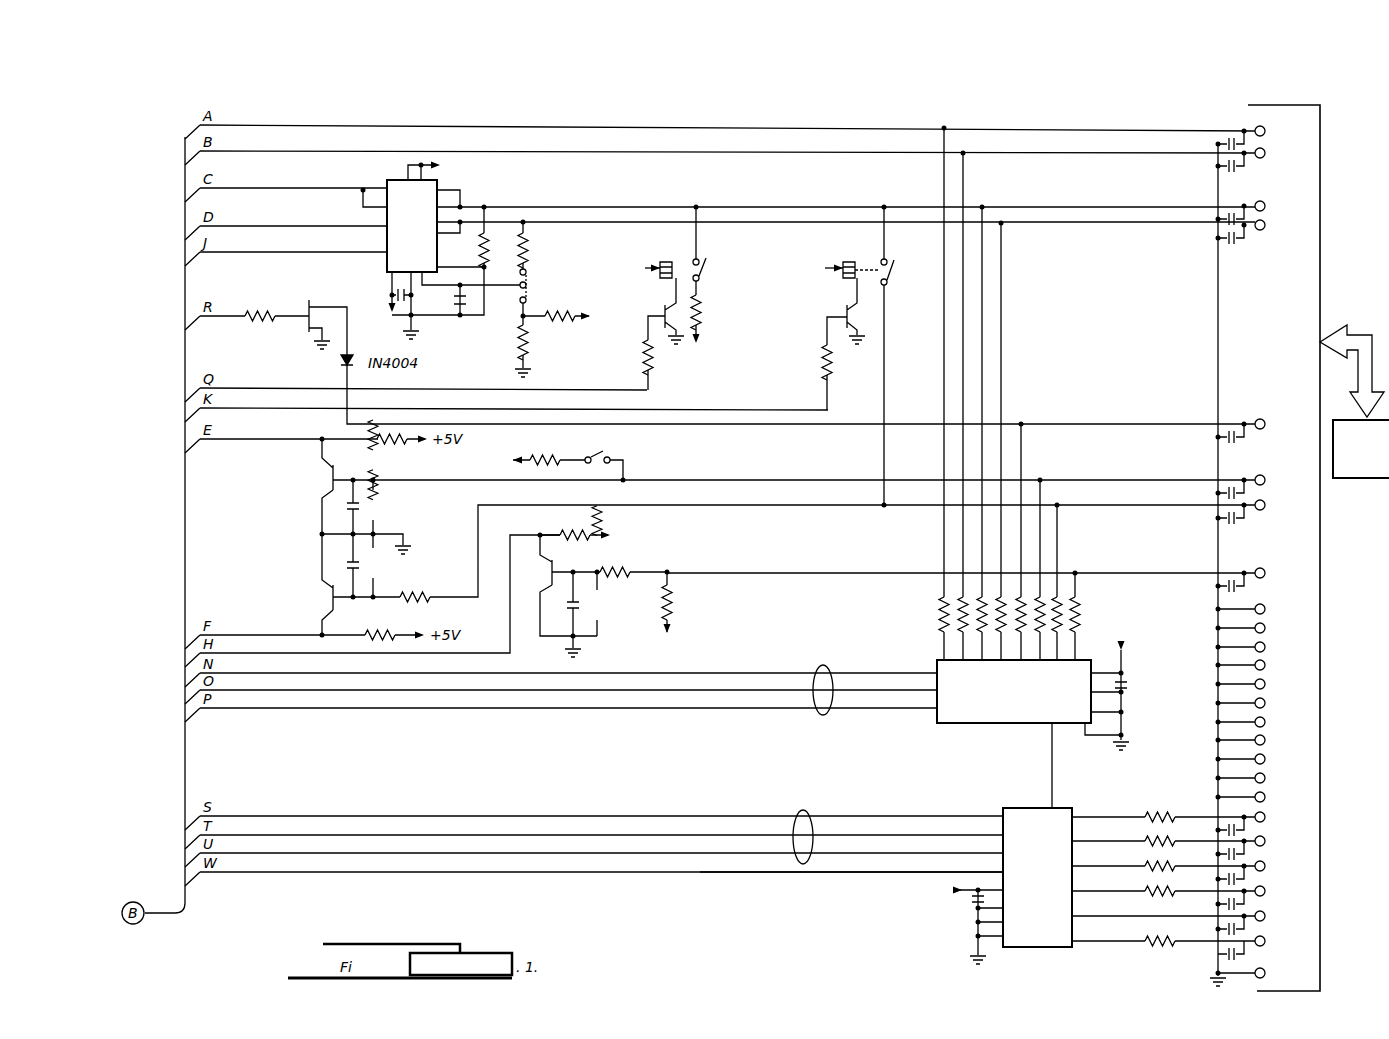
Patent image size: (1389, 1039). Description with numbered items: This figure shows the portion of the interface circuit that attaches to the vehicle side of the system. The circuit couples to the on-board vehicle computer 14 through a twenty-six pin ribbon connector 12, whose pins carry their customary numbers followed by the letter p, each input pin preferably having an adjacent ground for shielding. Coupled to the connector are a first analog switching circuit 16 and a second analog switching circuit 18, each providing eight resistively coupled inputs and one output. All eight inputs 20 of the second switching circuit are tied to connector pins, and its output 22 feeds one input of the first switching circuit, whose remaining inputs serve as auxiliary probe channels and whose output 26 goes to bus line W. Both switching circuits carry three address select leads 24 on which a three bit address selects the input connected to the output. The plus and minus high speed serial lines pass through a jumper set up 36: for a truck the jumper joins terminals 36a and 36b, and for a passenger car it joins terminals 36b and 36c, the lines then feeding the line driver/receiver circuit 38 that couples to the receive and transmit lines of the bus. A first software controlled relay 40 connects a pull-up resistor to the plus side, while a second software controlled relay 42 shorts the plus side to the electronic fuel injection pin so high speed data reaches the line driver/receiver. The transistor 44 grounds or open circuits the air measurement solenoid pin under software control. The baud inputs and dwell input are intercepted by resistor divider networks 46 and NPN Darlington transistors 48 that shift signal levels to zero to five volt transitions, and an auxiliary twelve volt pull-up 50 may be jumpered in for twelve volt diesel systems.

The ribbon connector 12 is at (1327, 545).
The on-board vehicle computer 14 is at (1354, 401).
The first analog switching circuit 16 is at (1080, 886).
The second analog switching circuit 18 is at (1037, 690).
The inputs 20 is at (1105, 604).
The output 22 is at (1052, 767).
The address select leads 24 is at (805, 810).
The output 26 is at (808, 875).
The jumper set up 36 is at (550, 292).
The terminal 36a is at (506, 274).
The terminal 36b is at (526, 285).
The terminal 36c is at (518, 302).
The line driver/receiver circuit 38 is at (808, 248).
The first software controlled relay 40 is at (723, 268).
The second software controlled relay 42 is at (897, 284).
The transistor 44 is at (305, 297).
The resistor divider network 46 is at (400, 528).
The NPN Darlington transistor 48 is at (312, 582).
The auxiliary twelve volt pull-up 50 is at (566, 456).